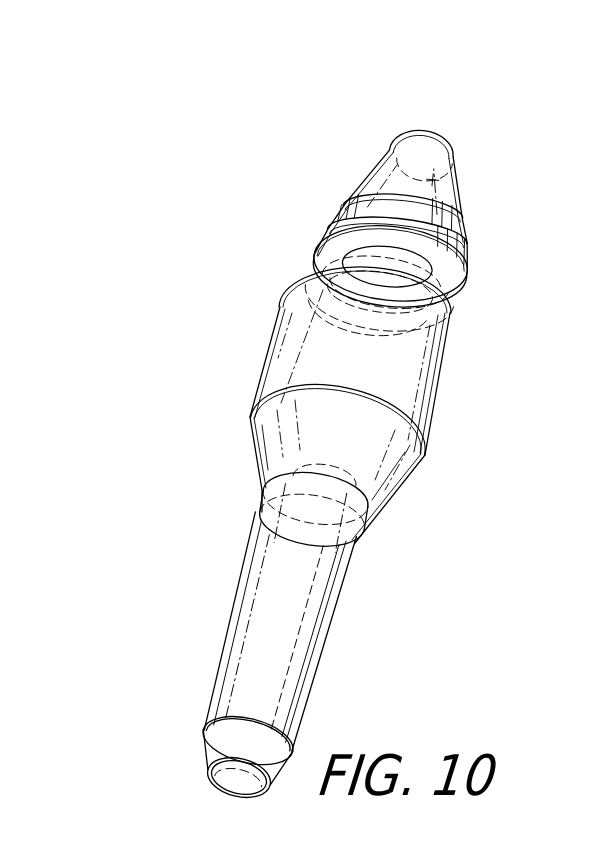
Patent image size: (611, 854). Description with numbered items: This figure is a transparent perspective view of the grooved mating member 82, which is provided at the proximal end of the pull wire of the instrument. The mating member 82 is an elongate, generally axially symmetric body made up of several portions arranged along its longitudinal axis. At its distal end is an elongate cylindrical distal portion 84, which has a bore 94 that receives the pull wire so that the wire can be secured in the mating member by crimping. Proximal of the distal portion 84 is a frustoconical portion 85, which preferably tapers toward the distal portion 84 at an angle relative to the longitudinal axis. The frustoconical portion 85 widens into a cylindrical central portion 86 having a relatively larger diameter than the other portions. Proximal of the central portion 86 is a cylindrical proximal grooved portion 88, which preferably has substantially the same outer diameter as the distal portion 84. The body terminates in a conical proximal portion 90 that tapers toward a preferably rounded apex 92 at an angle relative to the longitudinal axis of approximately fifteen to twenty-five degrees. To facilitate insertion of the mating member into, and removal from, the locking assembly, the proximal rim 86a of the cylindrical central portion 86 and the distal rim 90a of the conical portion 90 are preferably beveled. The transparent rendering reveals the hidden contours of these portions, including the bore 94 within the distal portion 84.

The mating member 82 is at (440, 393).
The elongate cylindrical distal portion 84 is at (243, 578).
The frustoconical portion 85 is at (390, 503).
The cylindrical central portion 86 is at (252, 401).
The proximal rim 86a is at (449, 356).
The cylindrical proximal grooved portion 88 is at (355, 261).
The conical proximal portion 90 is at (370, 168).
The distal rim 90a is at (472, 268).
The rounded apex 92 is at (414, 142).
The bore 94 is at (224, 772).